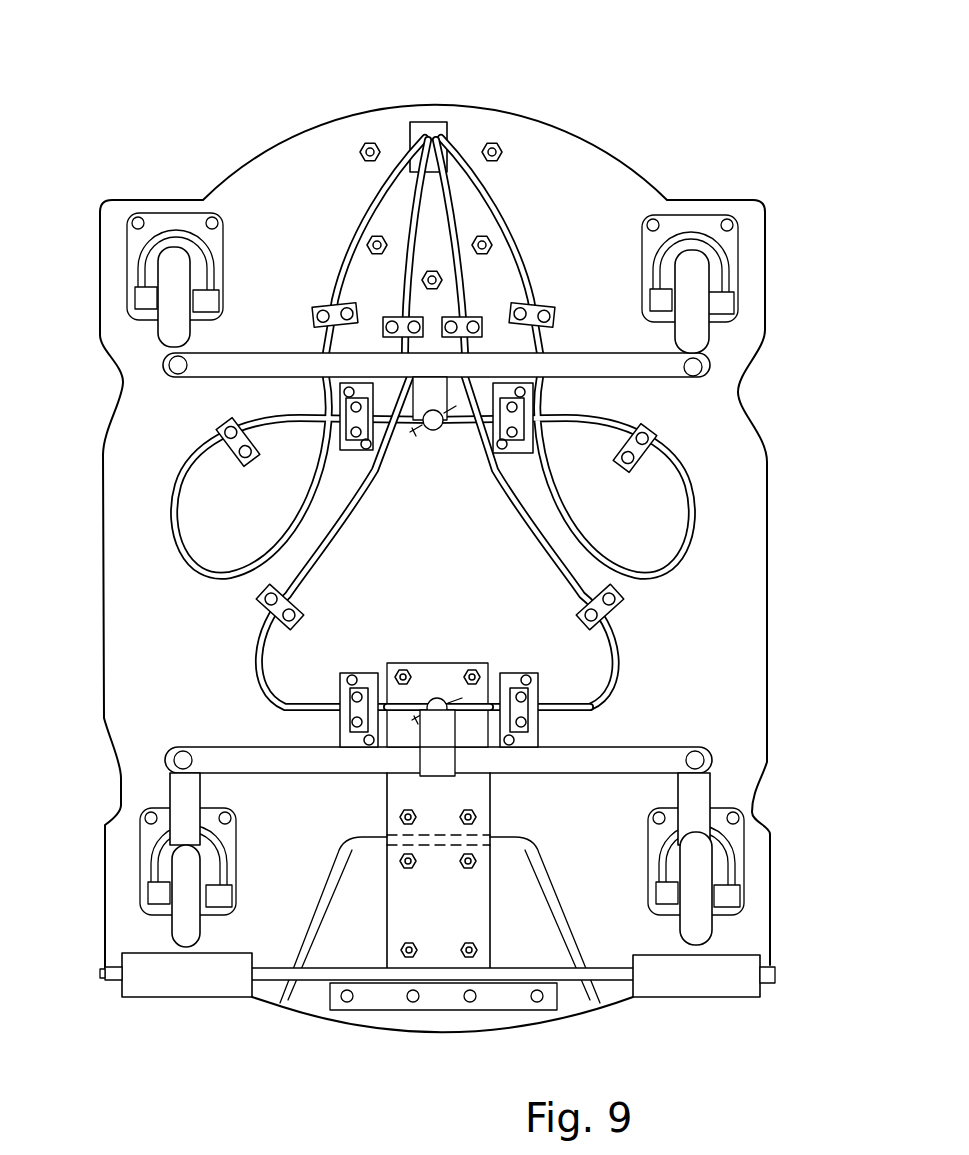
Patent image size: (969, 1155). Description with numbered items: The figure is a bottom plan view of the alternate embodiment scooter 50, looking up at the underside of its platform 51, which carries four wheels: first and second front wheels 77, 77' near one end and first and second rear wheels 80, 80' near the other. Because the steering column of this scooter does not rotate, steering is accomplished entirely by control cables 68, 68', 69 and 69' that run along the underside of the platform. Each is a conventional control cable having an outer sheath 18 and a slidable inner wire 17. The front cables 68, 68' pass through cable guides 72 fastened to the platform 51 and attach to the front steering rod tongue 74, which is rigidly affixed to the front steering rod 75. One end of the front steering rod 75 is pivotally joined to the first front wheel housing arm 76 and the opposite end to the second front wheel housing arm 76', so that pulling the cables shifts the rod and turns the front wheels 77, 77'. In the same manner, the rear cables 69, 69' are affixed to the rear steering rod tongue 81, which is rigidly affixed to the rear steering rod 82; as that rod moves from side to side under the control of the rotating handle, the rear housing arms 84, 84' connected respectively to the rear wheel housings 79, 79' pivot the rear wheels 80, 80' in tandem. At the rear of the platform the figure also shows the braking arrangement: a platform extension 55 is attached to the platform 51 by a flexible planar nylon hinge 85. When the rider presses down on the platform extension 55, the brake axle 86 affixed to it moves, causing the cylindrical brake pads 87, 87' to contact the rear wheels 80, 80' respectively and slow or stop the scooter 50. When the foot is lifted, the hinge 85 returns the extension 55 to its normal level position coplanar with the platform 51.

The slidable inner wire 17 is at (488, 668).
The outer sheath 18 is at (575, 703).
The scooter 50 is at (597, 118).
The platform 51 is at (743, 683).
The platform extension 55 is at (412, 1023).
The control cable 68 is at (274, 357).
The control cable 68' is at (579, 357).
The control cable 69 is at (313, 423).
The control cable 69' is at (557, 423).
The cable guide 72 is at (347, 310).
The front steering rod tongue 74 is at (437, 433).
The front steering rod 75 is at (590, 353).
The first front wheel housing arm 76 is at (116, 376).
The second front wheel housing arm 76' is at (763, 379).
The first front wheel 77 is at (126, 280).
The second front wheel 77' is at (743, 284).
The rear wheel housing 79 is at (133, 861).
The rear wheel housing 79' is at (746, 861).
The first rear wheel 80 is at (112, 908).
The second rear wheel 80' is at (759, 888).
The rear steering rod tongue 81 is at (443, 732).
The rear steering rod 82 is at (612, 760).
The rear housing arm 84 is at (156, 781).
The rear housing arm 84' is at (723, 781).
The planar nylon hinge 85 is at (470, 908).
The brake axle 86 is at (597, 980).
The cylindrical brake pad 87 is at (162, 1000).
The cylindrical brake pad 87' is at (717, 1006).